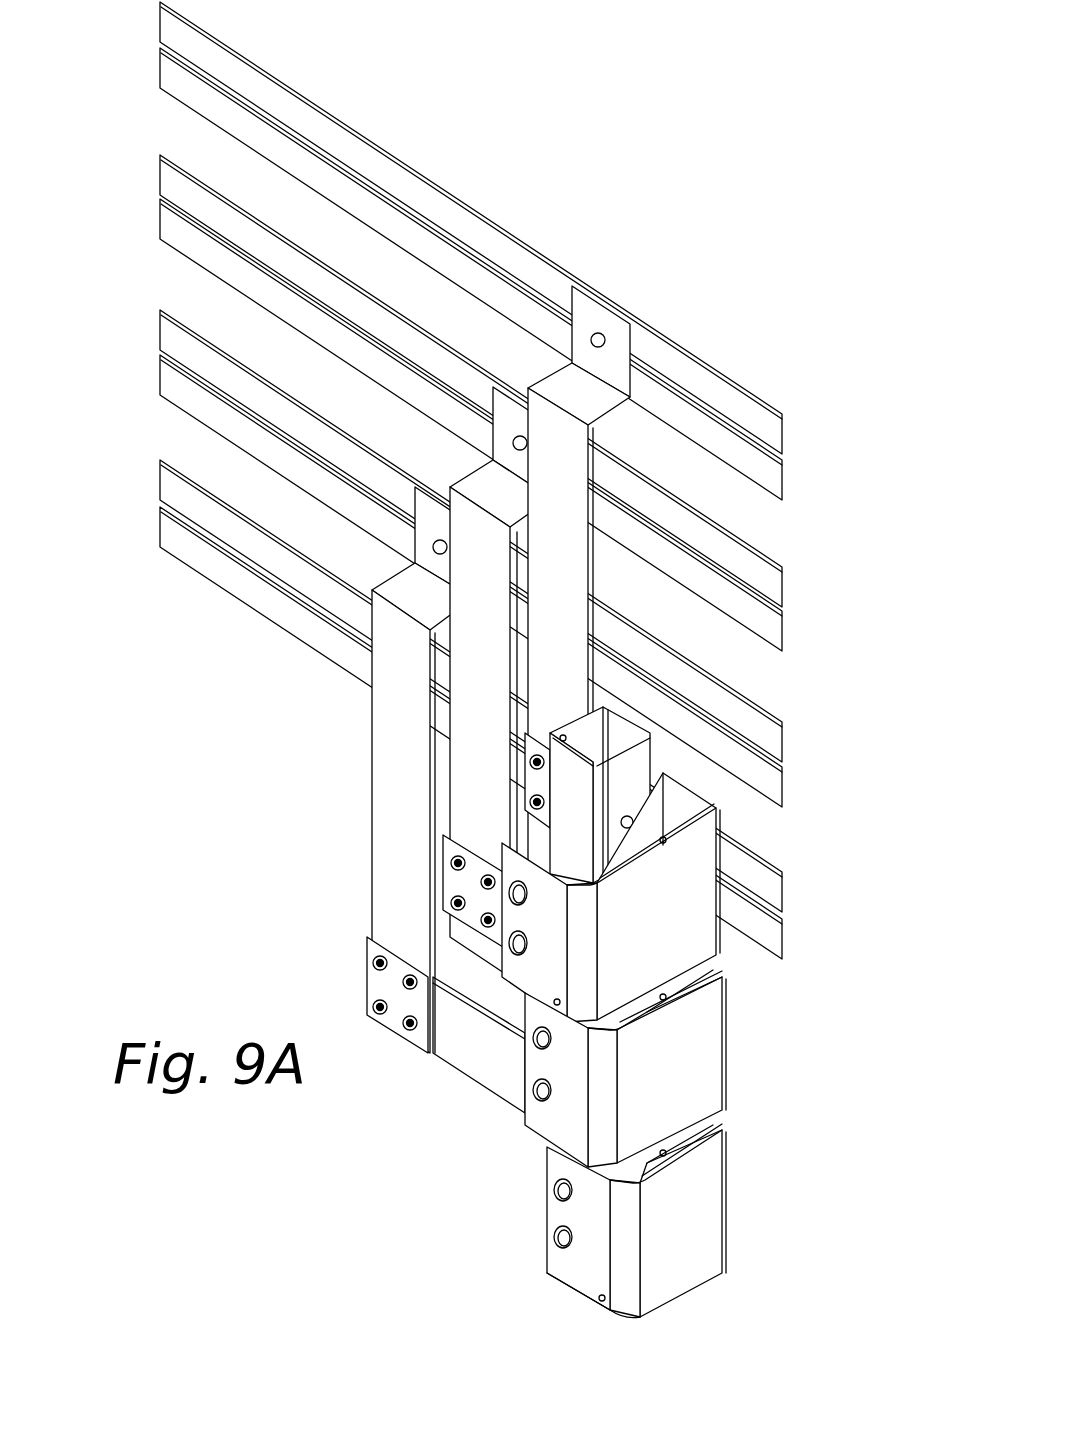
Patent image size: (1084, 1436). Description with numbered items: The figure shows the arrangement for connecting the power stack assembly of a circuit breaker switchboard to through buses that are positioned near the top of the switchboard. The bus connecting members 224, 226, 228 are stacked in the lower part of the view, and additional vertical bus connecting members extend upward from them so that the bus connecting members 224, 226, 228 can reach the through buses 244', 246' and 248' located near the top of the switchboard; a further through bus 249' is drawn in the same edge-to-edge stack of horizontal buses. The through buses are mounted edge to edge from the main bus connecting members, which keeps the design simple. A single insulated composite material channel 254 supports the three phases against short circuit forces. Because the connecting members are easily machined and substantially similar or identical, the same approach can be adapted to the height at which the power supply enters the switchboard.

The through bus 244' is at (414, 251).
The through bus 246' is at (414, 403).
The through bus 248' is at (414, 558).
The rail board 249' is at (414, 709).
The insulated composite material channel 254 is at (650, 753).
The bus connecting member 224 is at (700, 940).
The bus connecting member 226 is at (695, 1102).
The bus connecting member 228 is at (695, 1258).